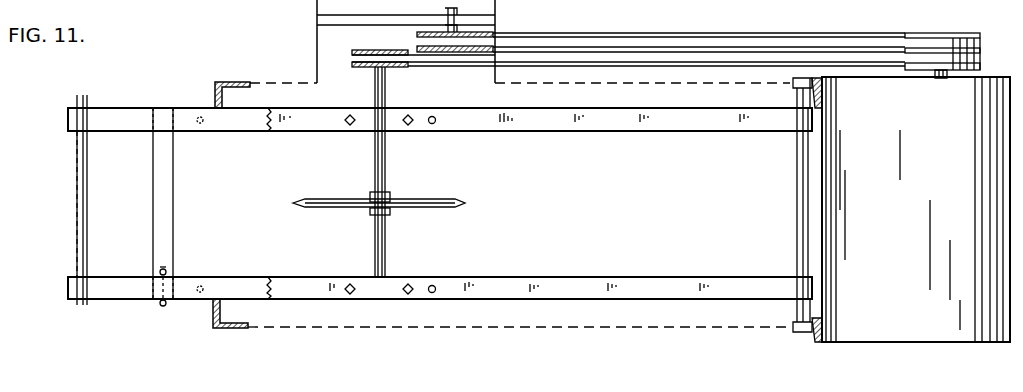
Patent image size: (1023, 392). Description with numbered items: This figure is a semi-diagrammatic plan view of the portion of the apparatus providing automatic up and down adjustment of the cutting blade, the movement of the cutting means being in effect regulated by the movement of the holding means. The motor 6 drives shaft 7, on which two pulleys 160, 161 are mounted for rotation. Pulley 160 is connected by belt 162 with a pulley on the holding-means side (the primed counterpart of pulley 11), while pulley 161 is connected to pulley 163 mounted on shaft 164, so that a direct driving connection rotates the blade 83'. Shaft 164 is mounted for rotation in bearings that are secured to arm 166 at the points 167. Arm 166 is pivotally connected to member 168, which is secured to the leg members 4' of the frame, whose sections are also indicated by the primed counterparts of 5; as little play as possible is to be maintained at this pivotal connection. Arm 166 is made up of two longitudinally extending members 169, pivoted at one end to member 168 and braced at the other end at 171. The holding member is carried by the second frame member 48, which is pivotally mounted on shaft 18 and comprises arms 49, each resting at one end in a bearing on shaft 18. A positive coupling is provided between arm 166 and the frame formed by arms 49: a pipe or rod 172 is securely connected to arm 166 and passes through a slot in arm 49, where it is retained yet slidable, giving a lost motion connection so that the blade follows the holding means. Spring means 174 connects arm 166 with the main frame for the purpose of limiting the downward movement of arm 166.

The leg members 4' is at (504, 192).
The frame 5 is at (588, 5).
The motor 6 is at (835, 158).
The shaft 7 is at (948, 75).
The support member 11 is at (462, 30).
The shaft 18 is at (78, 182).
The second frame member 48 is at (118, 134).
The arms 49 is at (129, 113).
The blade 83' is at (379, 218).
The pulley 160 is at (952, 33).
The pulley 161 is at (925, 72).
The belt 162 is at (712, 48).
The pulley 163 is at (358, 68).
The shaft 164 is at (386, 84).
The arm 166 is at (626, 133).
The securing means 167 is at (348, 125).
The member 168 is at (800, 243).
The longitudinally extending members 169 is at (514, 118).
The brace 171 is at (165, 183).
The rod 172 is at (162, 304).
The spring means 174 is at (432, 124).